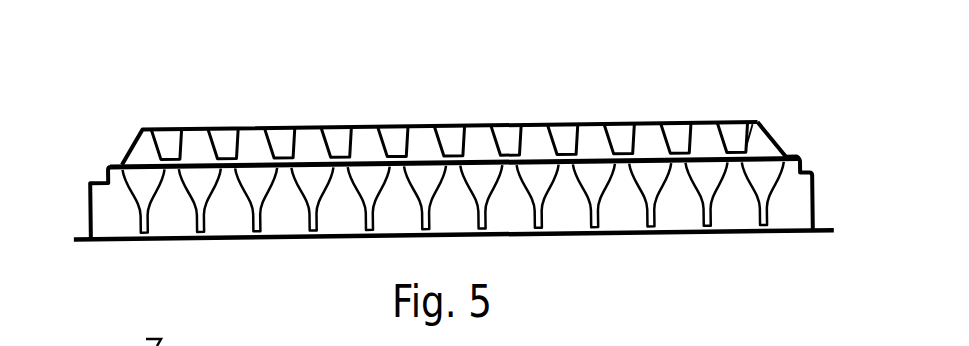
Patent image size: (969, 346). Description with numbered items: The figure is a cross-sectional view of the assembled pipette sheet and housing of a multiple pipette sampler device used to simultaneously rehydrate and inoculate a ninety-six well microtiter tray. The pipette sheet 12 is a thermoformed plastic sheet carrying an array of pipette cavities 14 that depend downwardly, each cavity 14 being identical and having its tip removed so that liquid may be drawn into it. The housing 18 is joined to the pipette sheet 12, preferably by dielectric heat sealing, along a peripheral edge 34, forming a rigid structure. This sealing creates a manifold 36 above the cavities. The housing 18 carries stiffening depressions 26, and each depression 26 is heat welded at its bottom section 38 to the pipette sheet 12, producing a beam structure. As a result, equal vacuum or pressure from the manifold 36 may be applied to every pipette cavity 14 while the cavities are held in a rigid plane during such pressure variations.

The pipette sheet 12 is at (110, 210).
The pipette cavity 14 is at (372, 205).
The housing 18 is at (258, 97).
The stiffening depression 26 is at (345, 128).
The peripheral edge 34 is at (787, 152).
The manifold 36 is at (762, 90).
The bottom section 38 is at (293, 170).